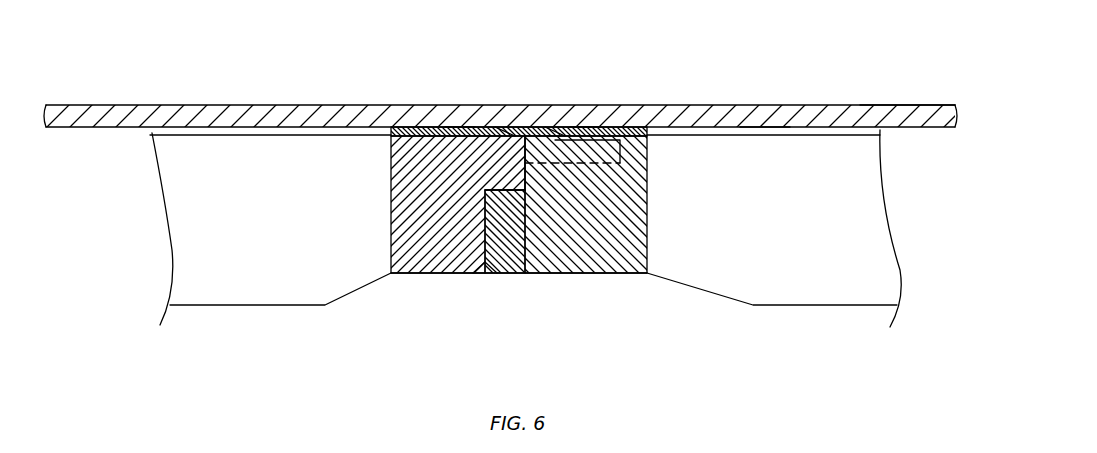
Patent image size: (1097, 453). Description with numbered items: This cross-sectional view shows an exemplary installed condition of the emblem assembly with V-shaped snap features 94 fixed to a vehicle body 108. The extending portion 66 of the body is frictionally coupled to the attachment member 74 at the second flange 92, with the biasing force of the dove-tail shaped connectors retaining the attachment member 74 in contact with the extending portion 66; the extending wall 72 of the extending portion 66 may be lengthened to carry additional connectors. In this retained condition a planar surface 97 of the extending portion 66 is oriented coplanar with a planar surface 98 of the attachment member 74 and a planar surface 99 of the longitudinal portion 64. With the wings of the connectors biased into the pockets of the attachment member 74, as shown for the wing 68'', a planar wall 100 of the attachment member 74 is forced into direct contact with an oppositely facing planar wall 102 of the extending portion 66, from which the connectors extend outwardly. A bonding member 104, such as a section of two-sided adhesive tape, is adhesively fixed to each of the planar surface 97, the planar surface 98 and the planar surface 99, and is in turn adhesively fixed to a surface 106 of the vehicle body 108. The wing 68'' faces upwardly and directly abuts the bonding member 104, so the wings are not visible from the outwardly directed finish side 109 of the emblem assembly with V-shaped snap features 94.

The longitudinal portion 64 is at (868, 270).
The extending portion 66 is at (428, 275).
The wing 68'' is at (565, 93).
The extending wall 72 is at (505, 134).
The attachment member 74 is at (617, 270).
The second flange 92 is at (508, 275).
The emblem assembly with V-shaped snap features 94 is at (895, 200).
The planar surface 97 is at (458, 123).
The planar surface 98 is at (585, 124).
The planar surface 99 is at (764, 124).
The planar wall 100 is at (514, 162).
The planar wall 102 is at (533, 178).
The bonding member 104 is at (352, 130).
The surface 106 is at (100, 132).
The vehicle body 108 is at (870, 112).
The finish side 109 is at (597, 278).